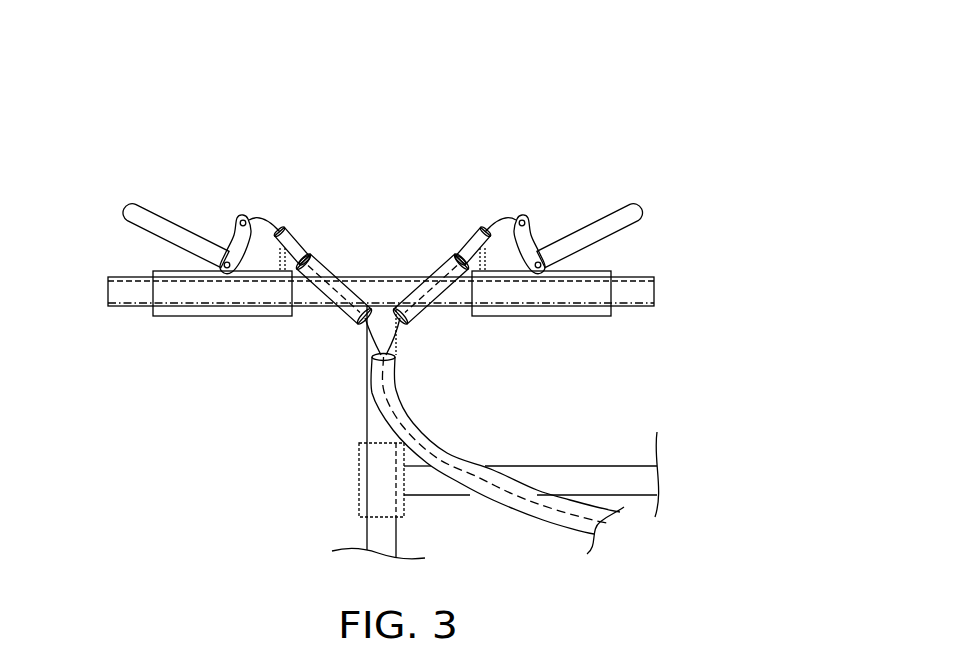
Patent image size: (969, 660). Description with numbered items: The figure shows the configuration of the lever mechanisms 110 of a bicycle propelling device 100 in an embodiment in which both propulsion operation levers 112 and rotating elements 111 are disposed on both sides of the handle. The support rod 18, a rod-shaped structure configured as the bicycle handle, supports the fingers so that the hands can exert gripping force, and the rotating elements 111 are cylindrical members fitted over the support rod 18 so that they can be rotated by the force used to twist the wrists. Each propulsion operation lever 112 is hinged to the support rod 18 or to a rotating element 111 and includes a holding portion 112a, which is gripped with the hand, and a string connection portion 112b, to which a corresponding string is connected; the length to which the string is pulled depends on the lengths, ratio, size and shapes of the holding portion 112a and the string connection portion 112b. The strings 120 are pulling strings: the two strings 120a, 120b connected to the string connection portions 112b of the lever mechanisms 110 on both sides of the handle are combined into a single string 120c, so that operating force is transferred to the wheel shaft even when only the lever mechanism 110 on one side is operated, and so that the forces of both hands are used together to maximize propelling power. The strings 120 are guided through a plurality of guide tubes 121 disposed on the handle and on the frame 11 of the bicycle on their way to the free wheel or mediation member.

The propelling device 100 is at (163, 36).
The support rod 18 is at (122, 310).
The rotating element 111 is at (233, 316).
The lever mechanism 110 is at (401, 206).
The propulsion operation lever 112 is at (385, 221).
The holding portion 112a is at (138, 204).
The string connection portion 112b is at (382, 210).
The guide tube 121 is at (297, 227).
The frame 11 is at (367, 429).
The string 120 is at (503, 364).
The first string 120a is at (380, 353).
The second string 120b is at (395, 317).
The single string 120c is at (537, 494).